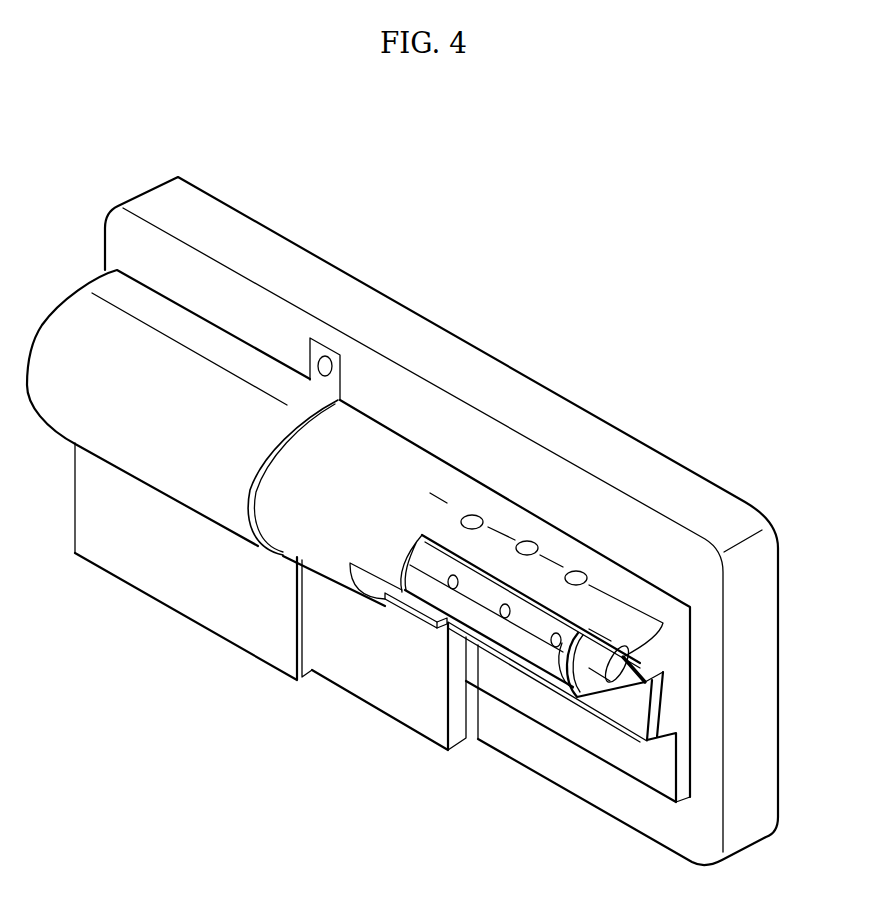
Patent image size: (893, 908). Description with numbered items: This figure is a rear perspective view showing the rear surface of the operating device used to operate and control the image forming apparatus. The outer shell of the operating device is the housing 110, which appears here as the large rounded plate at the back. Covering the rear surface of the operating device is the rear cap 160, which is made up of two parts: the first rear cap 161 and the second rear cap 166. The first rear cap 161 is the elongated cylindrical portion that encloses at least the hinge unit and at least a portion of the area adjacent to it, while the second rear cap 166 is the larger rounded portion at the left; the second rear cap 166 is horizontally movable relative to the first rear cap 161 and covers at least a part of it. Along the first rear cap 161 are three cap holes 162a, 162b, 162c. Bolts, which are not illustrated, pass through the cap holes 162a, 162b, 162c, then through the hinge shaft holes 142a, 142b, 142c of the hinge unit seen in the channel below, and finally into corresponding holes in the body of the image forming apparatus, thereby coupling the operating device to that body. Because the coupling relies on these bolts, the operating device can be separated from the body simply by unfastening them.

The housing 110 is at (332, 283).
The rear cap 160 is at (292, 680).
The first rear cap 161 is at (418, 500).
The cap hole 162a is at (472, 515).
The cap hole 162b is at (527, 541).
The cap hole 162c is at (578, 571).
The second rear cap 166 is at (213, 380).
The hinge shaft hole 142a is at (453, 587).
The hinge shaft hole 142b is at (505, 617).
The hinge shaft hole 142c is at (556, 646).